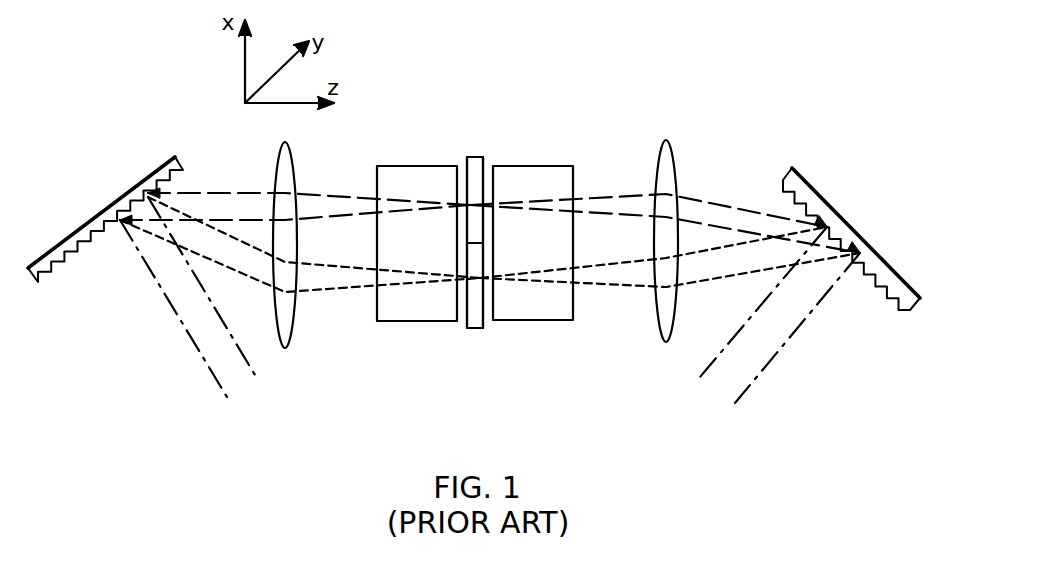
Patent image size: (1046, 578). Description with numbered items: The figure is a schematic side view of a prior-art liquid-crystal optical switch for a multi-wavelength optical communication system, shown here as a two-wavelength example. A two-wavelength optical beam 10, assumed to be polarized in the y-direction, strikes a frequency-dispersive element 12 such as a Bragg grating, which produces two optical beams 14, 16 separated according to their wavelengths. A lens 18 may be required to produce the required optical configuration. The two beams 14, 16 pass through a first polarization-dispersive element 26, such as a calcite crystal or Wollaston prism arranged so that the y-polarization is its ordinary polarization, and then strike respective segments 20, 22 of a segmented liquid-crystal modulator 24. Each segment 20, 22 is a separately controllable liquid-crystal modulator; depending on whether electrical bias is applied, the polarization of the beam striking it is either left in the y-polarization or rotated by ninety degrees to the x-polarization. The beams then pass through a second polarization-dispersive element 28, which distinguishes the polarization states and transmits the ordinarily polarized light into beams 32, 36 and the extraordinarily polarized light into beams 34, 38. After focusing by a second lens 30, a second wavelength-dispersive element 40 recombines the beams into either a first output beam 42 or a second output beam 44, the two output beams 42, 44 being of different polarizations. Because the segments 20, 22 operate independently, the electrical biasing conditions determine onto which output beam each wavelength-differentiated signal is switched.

The two-wavelength optical beam 10 is at (190, 310).
The frequency-dispersive element 12 is at (152, 175).
The optical beam 14 is at (247, 202).
The optical beam 16 is at (208, 257).
The lens 18 is at (287, 320).
The segment 20 is at (472, 168).
The segment 22 is at (470, 318).
The segmented liquid-crystal modulator 24 is at (484, 261).
The first polarization-dispersive element 26 is at (417, 178).
The second polarization-dispersive element 28 is at (550, 178).
The second lens 30 is at (667, 342).
The beam 32 is at (625, 200).
The beam 34 is at (755, 217).
The beam 36 is at (590, 277).
The beam 38 is at (730, 267).
The second wavelength-dispersive element 40 is at (810, 185).
The first output beam 42 is at (792, 313).
The second output beam 44 is at (797, 328).